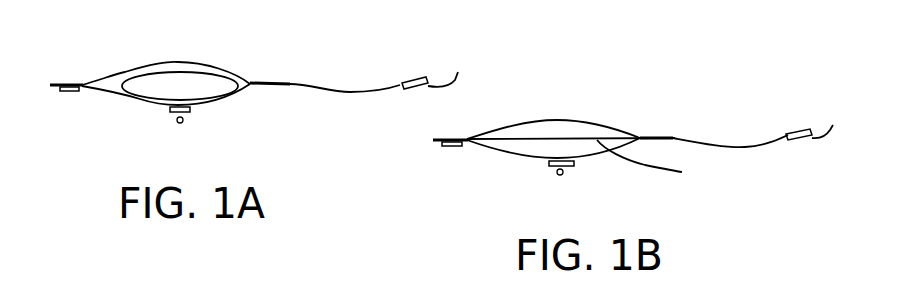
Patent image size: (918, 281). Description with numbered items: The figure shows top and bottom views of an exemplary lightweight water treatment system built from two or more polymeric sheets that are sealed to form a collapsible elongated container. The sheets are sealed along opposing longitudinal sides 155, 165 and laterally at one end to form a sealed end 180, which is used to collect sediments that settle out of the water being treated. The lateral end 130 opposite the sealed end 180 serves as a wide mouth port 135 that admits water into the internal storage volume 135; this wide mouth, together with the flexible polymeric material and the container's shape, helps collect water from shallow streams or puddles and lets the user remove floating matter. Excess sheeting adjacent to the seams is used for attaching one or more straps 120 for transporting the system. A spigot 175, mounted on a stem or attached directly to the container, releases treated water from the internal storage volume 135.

In FIG. 1A, the straps 120 is at (67, 93).
In FIG. 1B, the straps 120 is at (453, 147).
In FIG. 1A, the lateral end 130 is at (244, 87).
In FIG. 1A, the internal storage volume 135 is at (167, 83).
In FIG. 1A, the longitudinal side 155 is at (93, 83).
In FIG. 1B, the longitudinal side 155 is at (470, 137).
In FIG. 1A, the longitudinal side 165 is at (267, 82).
In FIG. 1B, the longitudinal side 165 is at (658, 135).
In FIG. 1A, the spigot 175 is at (180, 124).
In FIG. 1B, the spigot 175 is at (560, 176).
In FIG. 1B, the sealed end 180 is at (657, 166).